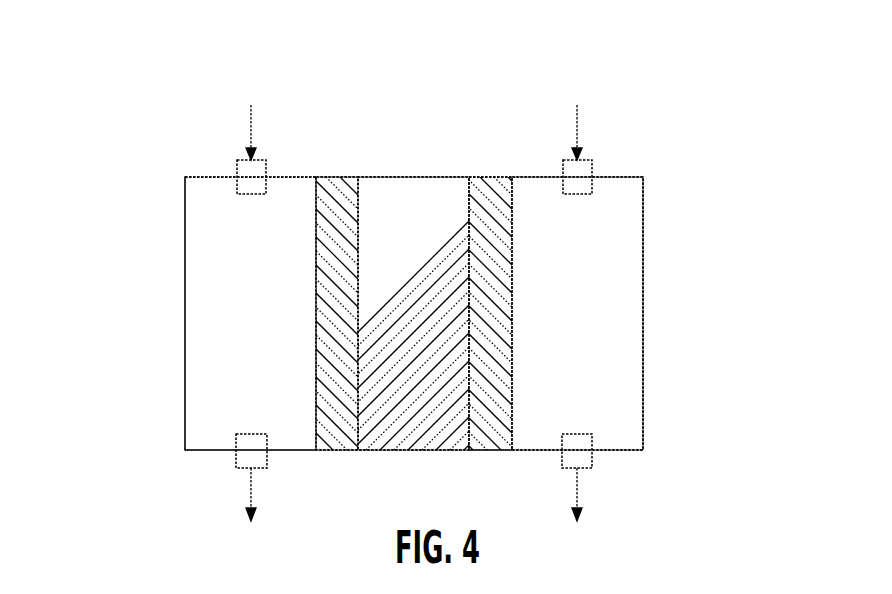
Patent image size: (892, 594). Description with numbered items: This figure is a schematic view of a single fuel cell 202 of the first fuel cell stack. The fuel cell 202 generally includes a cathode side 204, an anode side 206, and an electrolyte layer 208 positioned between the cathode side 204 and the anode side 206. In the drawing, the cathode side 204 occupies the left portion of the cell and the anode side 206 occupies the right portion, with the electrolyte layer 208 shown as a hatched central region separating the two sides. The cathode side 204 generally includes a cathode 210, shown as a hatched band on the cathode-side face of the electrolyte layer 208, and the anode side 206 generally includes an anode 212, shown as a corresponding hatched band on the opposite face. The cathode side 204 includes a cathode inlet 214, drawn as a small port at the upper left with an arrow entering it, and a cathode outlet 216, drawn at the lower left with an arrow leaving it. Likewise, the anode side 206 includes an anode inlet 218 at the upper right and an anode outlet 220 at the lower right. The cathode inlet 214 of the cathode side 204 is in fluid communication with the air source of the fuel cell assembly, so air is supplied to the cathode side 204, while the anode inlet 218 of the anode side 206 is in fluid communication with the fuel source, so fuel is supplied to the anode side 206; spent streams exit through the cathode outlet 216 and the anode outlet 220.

The fuel cell 202 is at (212, 62).
The cathode side 204 is at (201, 298).
The anode side 206 is at (616, 239).
The electrolyte layer 208 is at (431, 313).
The cathode 210 is at (341, 194).
The anode 212 is at (494, 388).
The cathode inlet 214 is at (248, 171).
The cathode outlet 216 is at (236, 458).
The anode inlet 218 is at (584, 170).
The anode outlet 220 is at (592, 458).